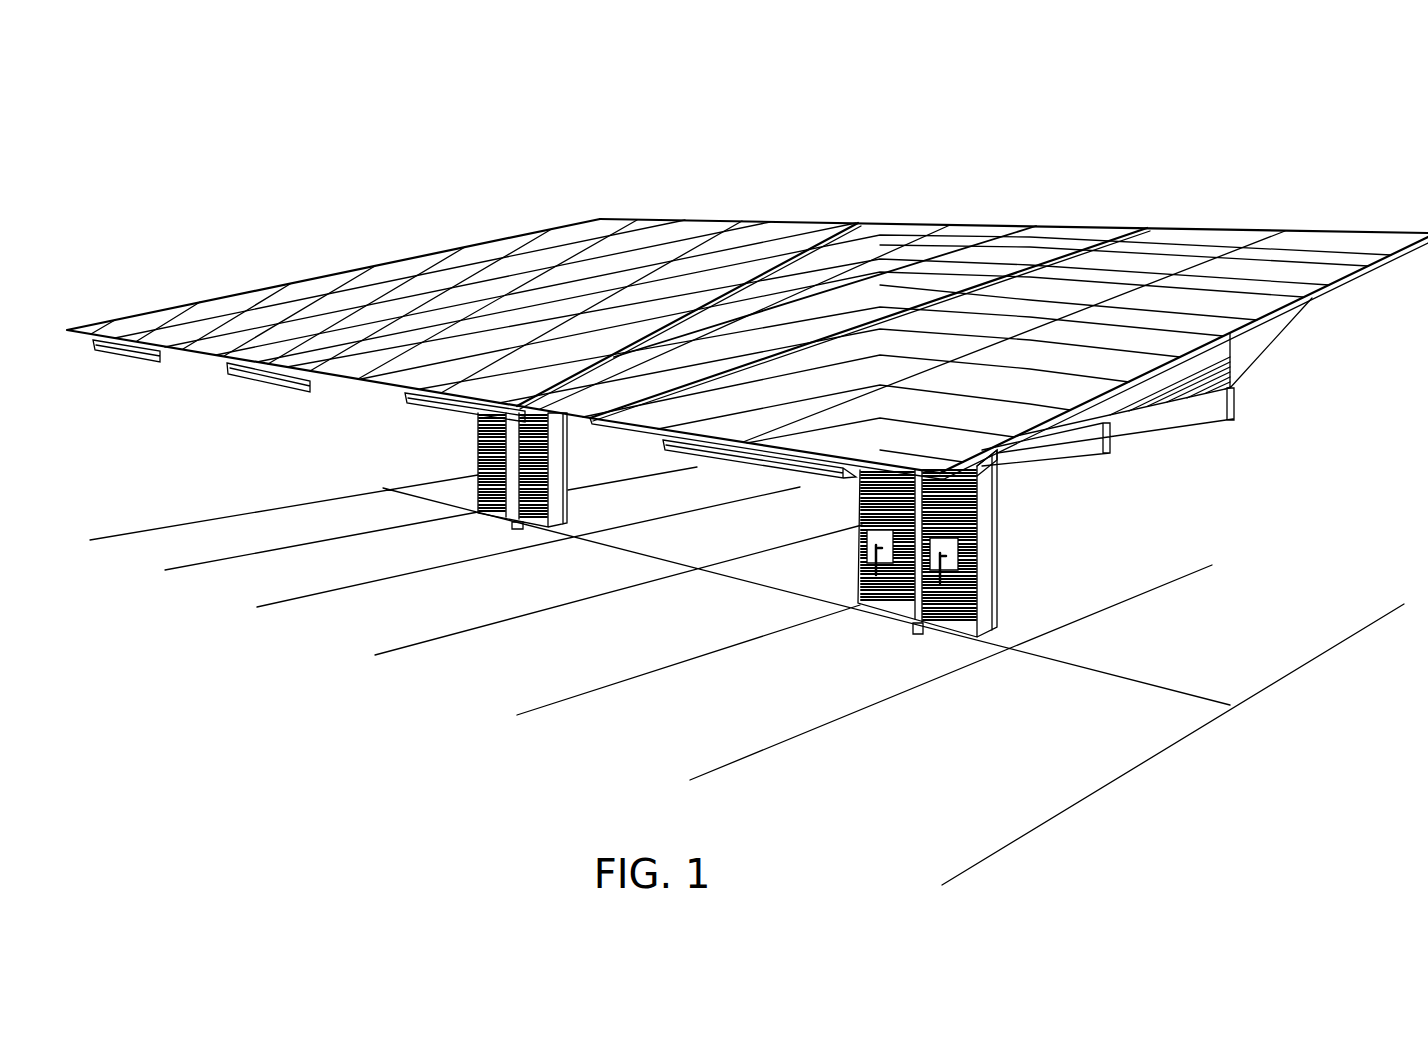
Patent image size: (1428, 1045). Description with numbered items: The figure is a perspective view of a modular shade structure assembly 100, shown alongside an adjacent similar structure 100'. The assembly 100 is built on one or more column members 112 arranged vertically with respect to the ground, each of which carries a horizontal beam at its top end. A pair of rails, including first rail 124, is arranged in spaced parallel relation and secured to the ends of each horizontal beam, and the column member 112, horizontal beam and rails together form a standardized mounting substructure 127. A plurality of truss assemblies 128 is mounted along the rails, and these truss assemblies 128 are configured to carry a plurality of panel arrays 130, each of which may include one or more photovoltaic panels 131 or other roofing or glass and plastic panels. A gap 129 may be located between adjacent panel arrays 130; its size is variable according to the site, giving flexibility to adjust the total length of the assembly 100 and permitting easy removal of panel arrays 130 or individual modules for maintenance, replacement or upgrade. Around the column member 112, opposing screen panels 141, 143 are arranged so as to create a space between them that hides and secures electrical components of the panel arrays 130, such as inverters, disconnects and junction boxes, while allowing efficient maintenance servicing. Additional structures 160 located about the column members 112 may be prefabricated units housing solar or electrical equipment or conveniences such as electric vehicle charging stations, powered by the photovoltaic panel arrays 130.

The modular shade structure assembly 100 is at (771, 283).
The adjacent solar canopy 100' is at (333, 320).
The column member 112 is at (510, 523).
The first rail 124 is at (1232, 422).
The mounting substructure 127 is at (1000, 486).
The truss assembly 128 is at (1272, 340).
The gap 129 is at (742, 210).
The panel array 130 is at (628, 217).
The photovoltaic panel 131 is at (437, 254).
The screen panel 141 is at (568, 500).
The screen panel 143 is at (580, 455).
The additional structure 160 is at (862, 548).